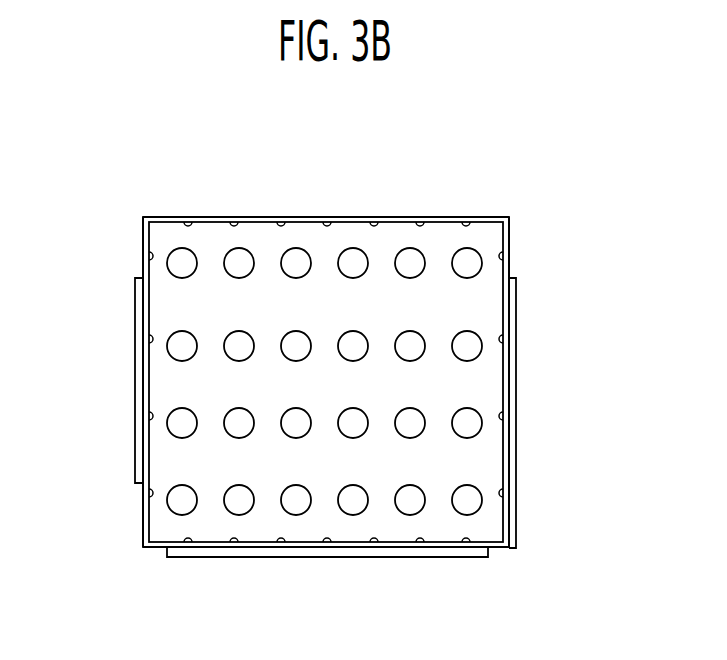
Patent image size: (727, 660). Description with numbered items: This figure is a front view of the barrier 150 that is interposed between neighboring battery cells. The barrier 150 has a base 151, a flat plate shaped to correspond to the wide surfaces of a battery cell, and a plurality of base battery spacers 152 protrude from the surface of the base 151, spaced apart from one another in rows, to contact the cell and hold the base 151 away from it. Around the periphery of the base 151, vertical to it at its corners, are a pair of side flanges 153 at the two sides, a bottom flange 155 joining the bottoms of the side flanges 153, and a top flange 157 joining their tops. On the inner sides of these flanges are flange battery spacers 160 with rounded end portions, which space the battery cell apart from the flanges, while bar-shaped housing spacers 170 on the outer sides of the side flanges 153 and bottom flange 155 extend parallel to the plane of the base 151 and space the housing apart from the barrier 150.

The barrier 150 is at (525, 162).
The base 151 is at (472, 387).
The base battery spacer 152 is at (468, 422).
The side flange 153 is at (143, 246).
The bottom flange 155 is at (157, 548).
The top flange 157 is at (425, 217).
The flange battery spacer 160 is at (278, 230).
The housing spacer 170 is at (135, 362).